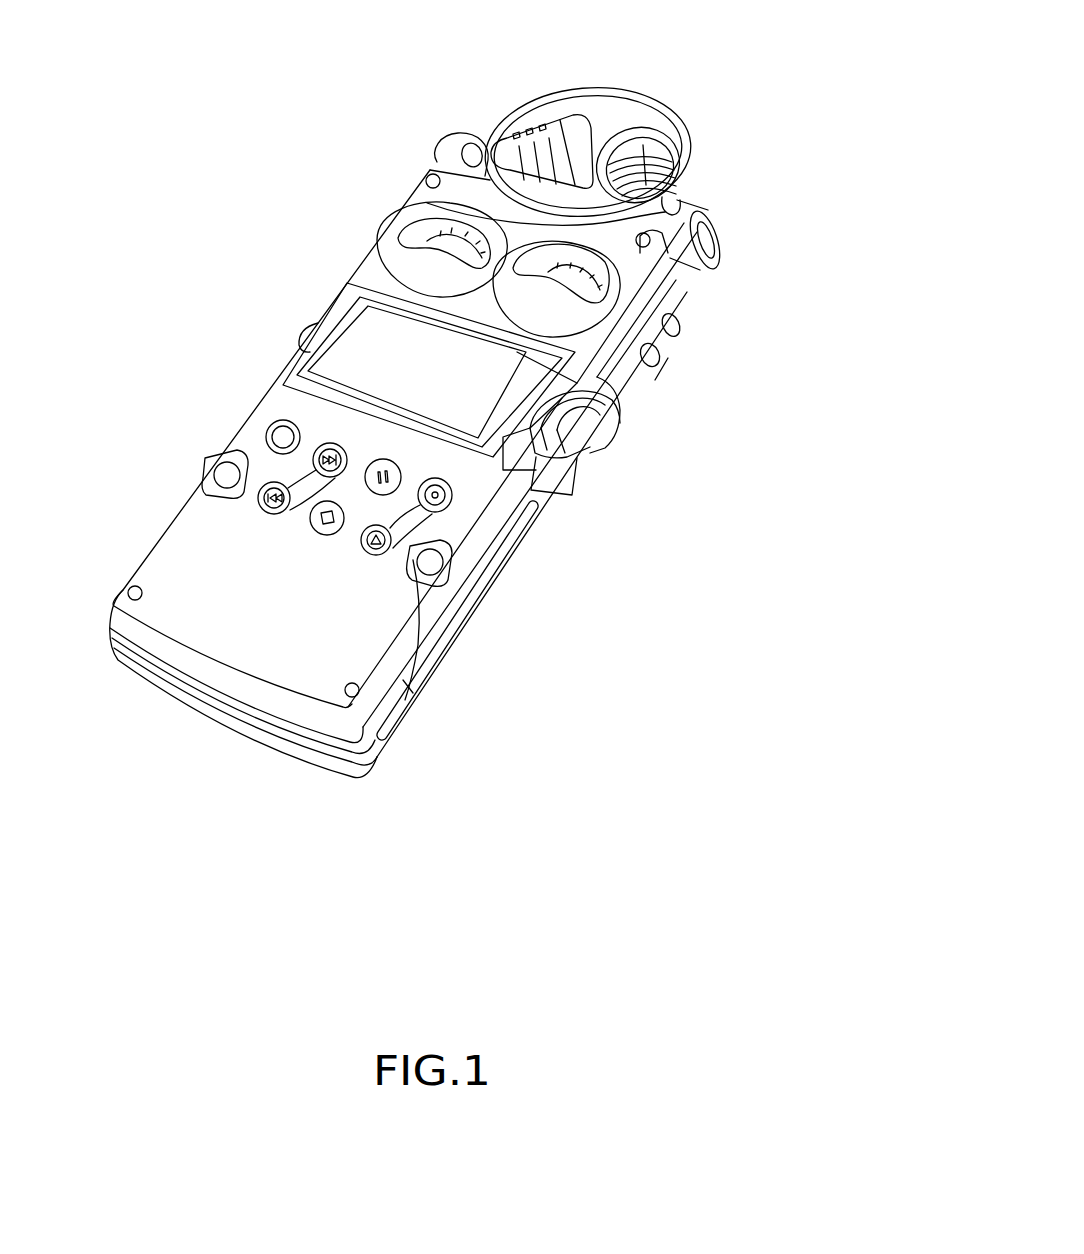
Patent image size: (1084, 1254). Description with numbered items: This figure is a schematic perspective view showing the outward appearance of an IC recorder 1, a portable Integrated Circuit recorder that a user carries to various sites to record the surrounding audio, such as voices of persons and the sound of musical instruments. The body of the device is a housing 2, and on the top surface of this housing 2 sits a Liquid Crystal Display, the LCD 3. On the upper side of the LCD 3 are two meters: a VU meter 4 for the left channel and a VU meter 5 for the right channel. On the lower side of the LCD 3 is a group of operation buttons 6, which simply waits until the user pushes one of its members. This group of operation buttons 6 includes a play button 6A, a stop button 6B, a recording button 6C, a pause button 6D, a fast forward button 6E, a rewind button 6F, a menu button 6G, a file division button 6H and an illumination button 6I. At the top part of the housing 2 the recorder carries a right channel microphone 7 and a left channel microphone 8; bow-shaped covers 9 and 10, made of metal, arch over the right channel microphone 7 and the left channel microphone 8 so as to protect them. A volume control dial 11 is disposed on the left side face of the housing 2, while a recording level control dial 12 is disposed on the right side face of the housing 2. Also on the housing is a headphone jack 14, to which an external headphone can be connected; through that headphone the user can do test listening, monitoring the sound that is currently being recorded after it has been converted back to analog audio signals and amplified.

The IC recorder 1 is at (222, 73).
The housing 2 is at (410, 737).
The Liquid Crystal Display (LCD) 3 is at (560, 372).
The VU meter for a left channel 4 is at (433, 220).
The VU meter for a right channel 5 is at (612, 272).
The group of operation buttons 6 is at (603, 580).
The play button 6A is at (412, 650).
The stop button 6B is at (312, 530).
The recording button 6C is at (452, 497).
The pause button 6D is at (368, 470).
The fast forward button 6E is at (300, 470).
The rewind button 6F is at (258, 508).
The menu button 6G is at (267, 440).
The file division button 6H is at (443, 567).
The illumination button 6I is at (208, 468).
The right channel microphone 7 is at (560, 113).
The left channel microphone 8 is at (650, 132).
The bow-shaped cover 9 is at (685, 130).
The bow-shaped cover 10 is at (690, 190).
The volume control dial 11 is at (300, 335).
The recording level control dial 12 is at (585, 425).
The headphone jack 14 is at (658, 354).